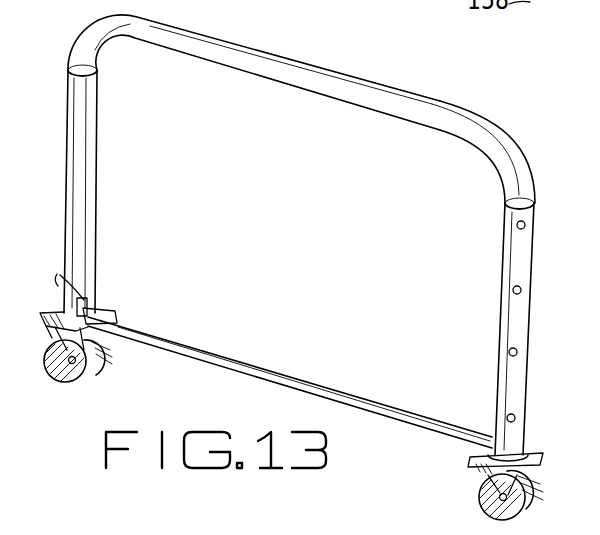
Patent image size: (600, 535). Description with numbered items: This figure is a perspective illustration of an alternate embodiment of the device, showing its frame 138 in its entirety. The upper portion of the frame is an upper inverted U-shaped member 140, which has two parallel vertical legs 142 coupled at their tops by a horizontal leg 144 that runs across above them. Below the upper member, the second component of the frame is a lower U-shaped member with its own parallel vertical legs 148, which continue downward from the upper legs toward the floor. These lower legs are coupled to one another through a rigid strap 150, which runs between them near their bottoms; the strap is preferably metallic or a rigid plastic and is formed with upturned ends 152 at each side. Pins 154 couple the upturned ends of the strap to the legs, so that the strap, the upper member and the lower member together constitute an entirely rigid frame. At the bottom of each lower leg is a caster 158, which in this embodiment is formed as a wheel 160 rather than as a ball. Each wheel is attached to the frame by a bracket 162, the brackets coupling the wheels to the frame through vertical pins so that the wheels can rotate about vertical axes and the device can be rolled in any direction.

The frame 138 is at (525, 156).
The upper inverted U-shaped member 140 is at (352, 78).
The vertical legs 142 is at (69, 66).
The horizontal leg 144 is at (481, 124).
The vertical legs 148 is at (68, 196).
The rigid strap 150 is at (255, 373).
The upturned ends 152 is at (60, 308).
The pins 154 is at (64, 268).
The casters 158 is at (80, 375).
The wheels 160 is at (102, 366).
The brackets 162 is at (533, 454).